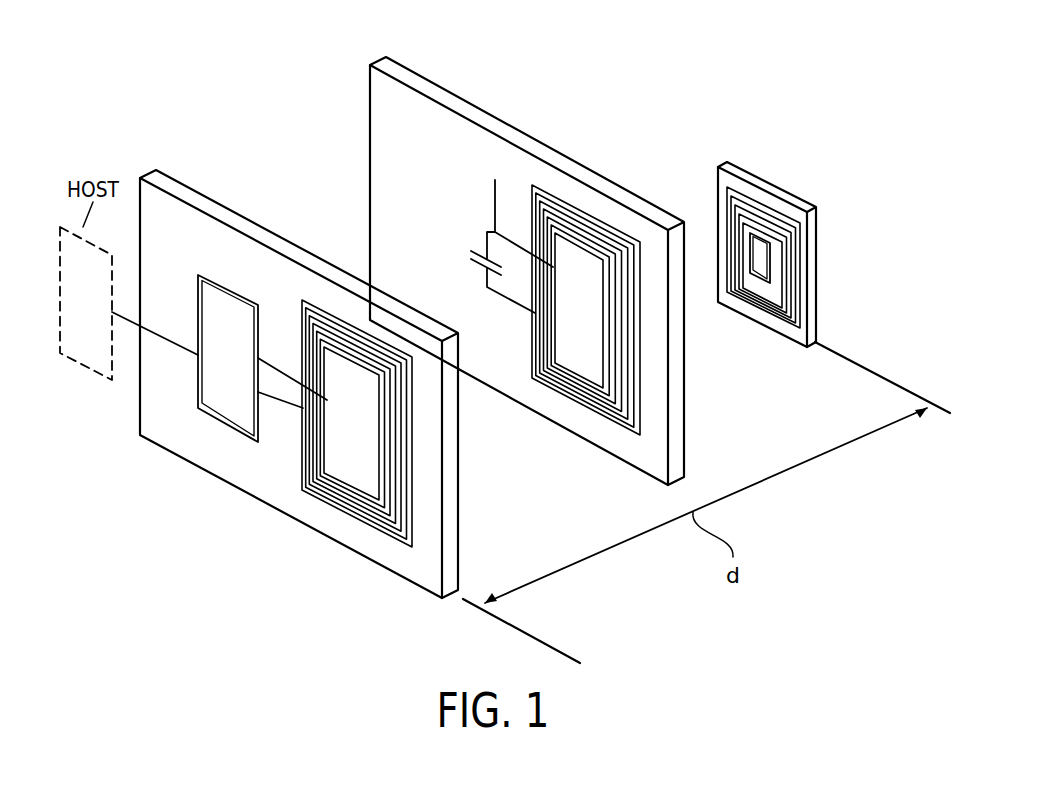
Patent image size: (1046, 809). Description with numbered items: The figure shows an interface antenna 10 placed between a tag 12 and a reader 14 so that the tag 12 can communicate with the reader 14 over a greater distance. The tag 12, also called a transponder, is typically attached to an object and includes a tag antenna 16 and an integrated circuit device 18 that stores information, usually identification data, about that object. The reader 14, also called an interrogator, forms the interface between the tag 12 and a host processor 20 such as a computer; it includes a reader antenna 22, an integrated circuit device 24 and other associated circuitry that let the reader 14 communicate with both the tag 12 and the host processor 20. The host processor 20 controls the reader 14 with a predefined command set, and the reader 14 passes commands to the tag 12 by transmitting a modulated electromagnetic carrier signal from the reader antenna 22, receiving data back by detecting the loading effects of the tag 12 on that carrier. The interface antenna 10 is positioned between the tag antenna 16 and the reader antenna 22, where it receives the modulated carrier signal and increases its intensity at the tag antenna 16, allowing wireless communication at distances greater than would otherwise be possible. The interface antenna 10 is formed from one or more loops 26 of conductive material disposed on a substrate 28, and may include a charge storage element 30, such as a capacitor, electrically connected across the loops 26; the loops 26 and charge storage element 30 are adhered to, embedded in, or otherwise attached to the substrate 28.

The interface antenna 10 is at (545, 264).
The tag 12 is at (790, 224).
The reader 14 is at (299, 348).
The tag antenna 16 is at (780, 223).
The integrated circuit device 18 is at (765, 265).
The host processor 20 is at (78, 317).
The reader antenna 22 is at (352, 338).
The integrated circuit device 24 is at (222, 322).
The loops 26 is at (572, 220).
The substrate 28 is at (457, 105).
The charge storage element 30 is at (495, 180).